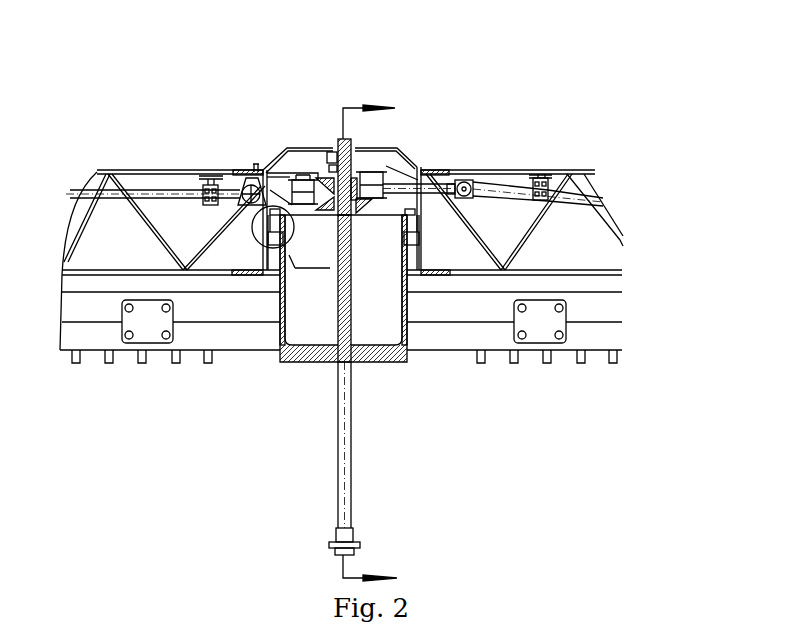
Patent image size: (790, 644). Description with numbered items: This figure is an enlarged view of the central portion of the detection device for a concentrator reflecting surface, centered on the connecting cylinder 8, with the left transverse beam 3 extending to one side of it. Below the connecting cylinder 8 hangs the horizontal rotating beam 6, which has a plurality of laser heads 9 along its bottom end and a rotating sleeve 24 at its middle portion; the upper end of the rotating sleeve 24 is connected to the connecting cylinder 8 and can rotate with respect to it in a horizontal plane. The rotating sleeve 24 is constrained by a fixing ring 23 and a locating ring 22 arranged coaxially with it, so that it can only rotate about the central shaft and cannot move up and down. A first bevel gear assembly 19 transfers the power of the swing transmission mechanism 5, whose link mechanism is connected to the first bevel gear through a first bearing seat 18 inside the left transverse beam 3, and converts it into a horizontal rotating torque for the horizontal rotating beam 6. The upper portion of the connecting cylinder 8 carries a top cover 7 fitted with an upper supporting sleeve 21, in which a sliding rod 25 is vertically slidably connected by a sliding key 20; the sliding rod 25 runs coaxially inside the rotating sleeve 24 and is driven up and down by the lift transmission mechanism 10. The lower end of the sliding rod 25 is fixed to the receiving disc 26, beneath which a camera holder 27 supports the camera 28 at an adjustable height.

The left transverse beam 3 is at (148, 175).
The swing transmission mechanism 5 is at (187, 193).
The horizontal rotating beam 6 is at (133, 345).
The top cover 7 is at (267, 163).
The connecting cylinder 8 is at (450, 190).
The laser head 9 is at (177, 363).
The lift transmission mechanism 10 is at (492, 185).
The first bearing seat 18 is at (300, 172).
The first bevel gear assembly 19 is at (316, 172).
The sliding key 20 is at (333, 170).
The upper supporting sleeve 21 is at (340, 148).
The locating ring 22 is at (420, 167).
The fixing ring 23 is at (279, 275).
The rotating sleeve 24 is at (281, 338).
The sliding rod 25 is at (407, 350).
The receiving disc 26 is at (353, 303).
The camera holder 27 is at (350, 418).
The camera 28 is at (354, 532).